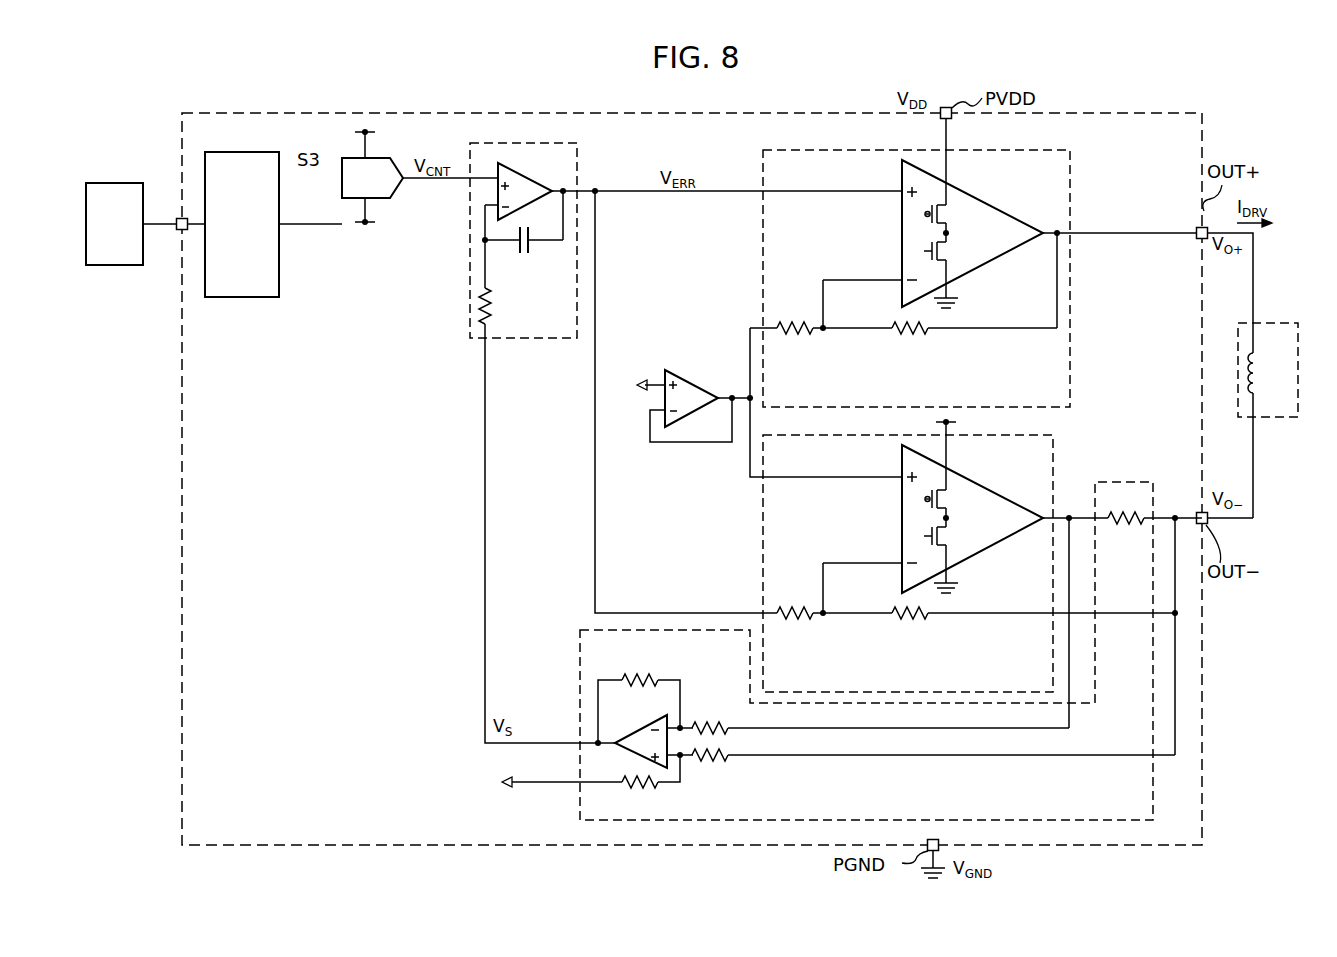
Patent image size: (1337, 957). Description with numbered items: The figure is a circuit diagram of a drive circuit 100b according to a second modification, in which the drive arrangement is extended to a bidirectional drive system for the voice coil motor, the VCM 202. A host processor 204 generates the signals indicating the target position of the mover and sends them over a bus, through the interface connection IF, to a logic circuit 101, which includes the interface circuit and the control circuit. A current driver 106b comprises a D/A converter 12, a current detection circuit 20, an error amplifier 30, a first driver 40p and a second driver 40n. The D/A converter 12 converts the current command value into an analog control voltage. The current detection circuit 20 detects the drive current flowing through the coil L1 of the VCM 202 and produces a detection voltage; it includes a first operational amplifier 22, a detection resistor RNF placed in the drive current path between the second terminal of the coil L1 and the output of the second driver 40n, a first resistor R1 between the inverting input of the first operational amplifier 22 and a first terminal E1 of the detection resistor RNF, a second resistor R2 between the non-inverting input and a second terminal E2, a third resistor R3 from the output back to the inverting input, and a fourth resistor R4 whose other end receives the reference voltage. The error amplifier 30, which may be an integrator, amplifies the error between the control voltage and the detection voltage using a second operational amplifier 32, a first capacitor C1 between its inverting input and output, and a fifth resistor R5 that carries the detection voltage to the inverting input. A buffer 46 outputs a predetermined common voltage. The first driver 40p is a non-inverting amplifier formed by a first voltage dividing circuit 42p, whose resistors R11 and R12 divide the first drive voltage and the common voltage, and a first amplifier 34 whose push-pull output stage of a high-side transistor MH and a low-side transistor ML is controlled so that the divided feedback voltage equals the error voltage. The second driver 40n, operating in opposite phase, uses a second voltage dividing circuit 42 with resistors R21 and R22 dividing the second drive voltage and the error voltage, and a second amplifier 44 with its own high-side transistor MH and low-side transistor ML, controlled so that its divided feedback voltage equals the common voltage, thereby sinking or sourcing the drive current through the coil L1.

The drive circuit 100b is at (643, 110).
The current driver 106b is at (376, 418).
The host processor 204 is at (118, 183).
The logic circuit 101 is at (245, 297).
The D/A converter 12 is at (403, 190).
The error amplifier 30 is at (577, 158).
The second operational amplifier 32 is at (522, 170).
The first amplifier 34 is at (968, 190).
The first driver 40p is at (1070, 165).
The second driver 40n is at (1053, 437).
The first voltage dividing circuit 42p is at (852, 366).
The second voltage dividing circuit 42 is at (852, 650).
The second amplifier 44 is at (968, 475).
The buffer 46 is at (689, 370).
The current detection circuit 20 is at (580, 650).
The first operational amplifier 22 is at (630, 728).
The voice coil motor 202 is at (1280, 310).
The coil L1 is at (1258, 370).
The first capacitor C1 is at (528, 256).
The fifth resistor R5 is at (492, 308).
The resistor R11 is at (802, 334).
The resistor R12 is at (897, 347).
The resistor R21 is at (802, 619).
The resistor R22 is at (897, 632).
The first resistor R1 is at (716, 720).
The second resistor R2 is at (712, 763).
The third resistor R3 is at (642, 672).
The fourth resistor R4 is at (636, 790).
The detection resistor RNF is at (1126, 526).
The high-side transistor MH is at (950, 216).
The low-side transistor ML is at (950, 252).
The first terminal E1 is at (1090, 512).
The second terminal E2 is at (1160, 512).
The interface terminal IF is at (182, 230).